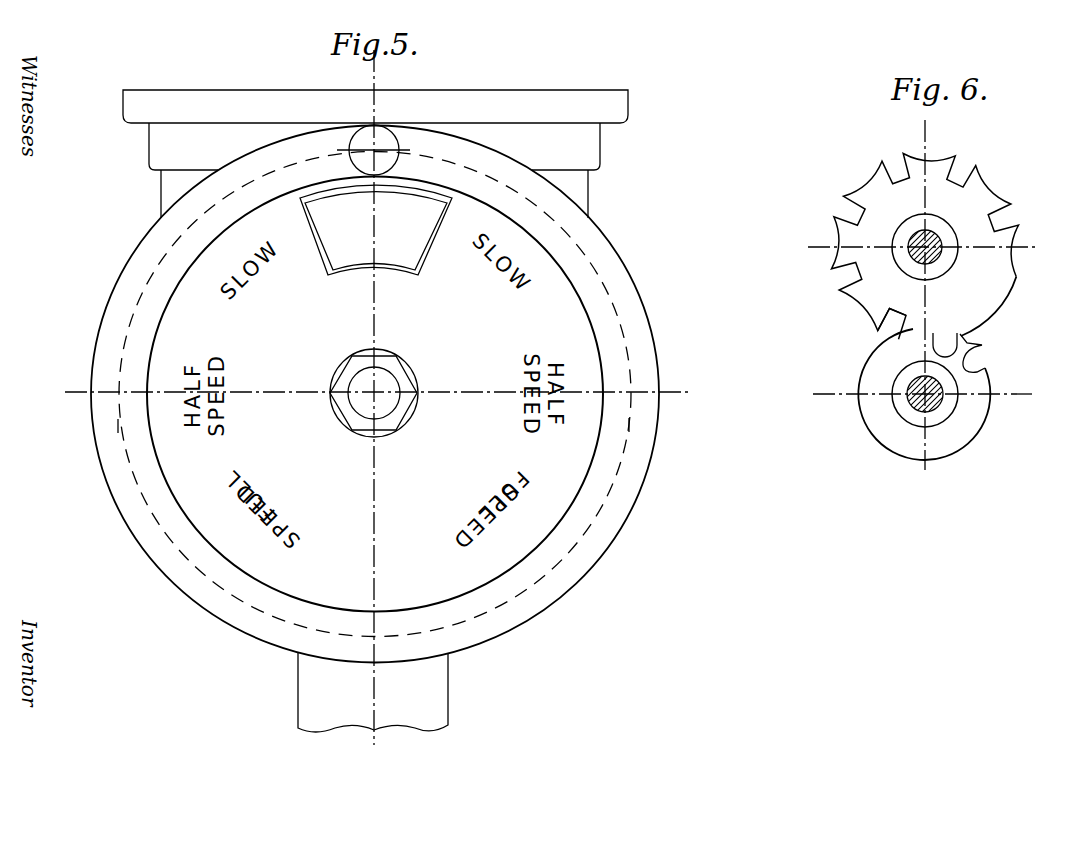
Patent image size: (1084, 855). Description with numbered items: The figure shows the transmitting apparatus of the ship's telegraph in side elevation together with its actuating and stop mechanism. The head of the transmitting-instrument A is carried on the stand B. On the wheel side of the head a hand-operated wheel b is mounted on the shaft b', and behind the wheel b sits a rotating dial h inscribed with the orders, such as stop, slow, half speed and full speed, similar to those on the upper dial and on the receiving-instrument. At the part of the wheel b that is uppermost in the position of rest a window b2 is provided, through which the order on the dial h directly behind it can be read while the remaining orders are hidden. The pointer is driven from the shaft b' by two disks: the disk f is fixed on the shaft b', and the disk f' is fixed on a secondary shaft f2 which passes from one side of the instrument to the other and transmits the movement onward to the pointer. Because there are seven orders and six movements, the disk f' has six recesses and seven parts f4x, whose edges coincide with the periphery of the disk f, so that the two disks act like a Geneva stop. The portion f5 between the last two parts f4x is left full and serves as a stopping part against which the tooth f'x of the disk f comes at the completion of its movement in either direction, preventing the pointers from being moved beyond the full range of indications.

In FIG. 5, the head of the transmitting-instrument A is at (369, 154).
In FIG. 5, the hand-operated wheel b is at (375, 394).
In FIG. 5, the shaft of the wheel b' is at (388, 382).
In FIG. 6, the shaft of the wheel b' is at (895, 406).
In FIG. 5, the window b2 is at (419, 273).
In FIG. 5, the stand B is at (299, 718).
In FIG. 5, the rotating dial h is at (118, 425).
In FIG. 6, the disk f is at (913, 394).
In FIG. 6, the disk f' is at (908, 244).
In FIG. 6, the secondary shaft f2 is at (913, 237).
In FIG. 6, the parts of the disk f4x is at (1018, 240).
In FIG. 6, the stopping part f5 is at (1003, 302).
In FIG. 6, the tooth f'x is at (989, 347).